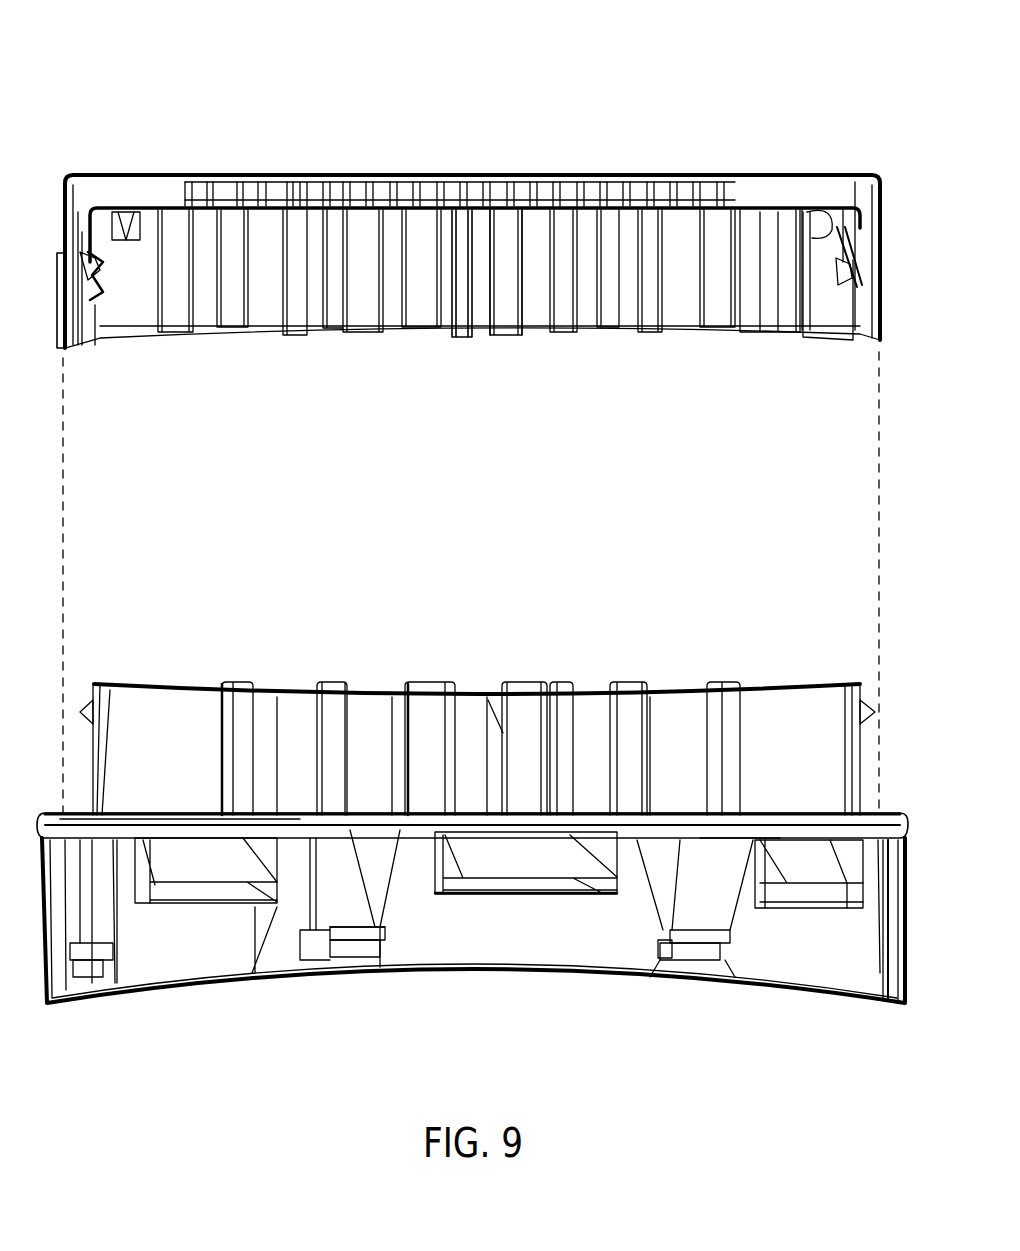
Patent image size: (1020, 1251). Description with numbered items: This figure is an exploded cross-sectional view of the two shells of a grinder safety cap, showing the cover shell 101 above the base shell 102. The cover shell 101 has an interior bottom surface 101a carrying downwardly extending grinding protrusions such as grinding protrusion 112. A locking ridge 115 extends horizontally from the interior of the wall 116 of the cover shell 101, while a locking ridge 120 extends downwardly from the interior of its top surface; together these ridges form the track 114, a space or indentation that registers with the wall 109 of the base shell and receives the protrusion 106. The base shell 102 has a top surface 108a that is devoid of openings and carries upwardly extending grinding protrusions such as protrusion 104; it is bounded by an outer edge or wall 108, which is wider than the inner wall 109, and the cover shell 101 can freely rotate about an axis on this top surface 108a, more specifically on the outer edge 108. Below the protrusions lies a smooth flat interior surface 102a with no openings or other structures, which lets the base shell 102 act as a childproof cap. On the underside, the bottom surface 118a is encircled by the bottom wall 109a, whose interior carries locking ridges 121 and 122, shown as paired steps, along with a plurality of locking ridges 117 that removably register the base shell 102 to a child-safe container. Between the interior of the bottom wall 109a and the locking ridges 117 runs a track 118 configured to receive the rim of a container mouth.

The cover shell 101 is at (475, 122).
The interior bottom surface 101a is at (507, 228).
The base shell 102 is at (765, 1040).
The interior surface 102a is at (731, 838).
The protrusion 104 is at (527, 700).
The protrusion 106 is at (870, 706).
The outer edge 108 is at (83, 813).
The top surface 108a is at (170, 812).
The wall 109 is at (96, 690).
The bottom wall 109a is at (50, 1006).
The grinding protrusion 112 is at (357, 327).
The track 114 is at (103, 238).
The locking ridge 115 is at (107, 267).
The wall 116 is at (66, 352).
The locking ridges 117 is at (527, 897).
The track 118 is at (113, 842).
The bottom surface 118a is at (570, 838).
The locking ridge 120 is at (133, 240).
The locking ridge 121 is at (385, 930).
The locking ridge 122 is at (338, 962).